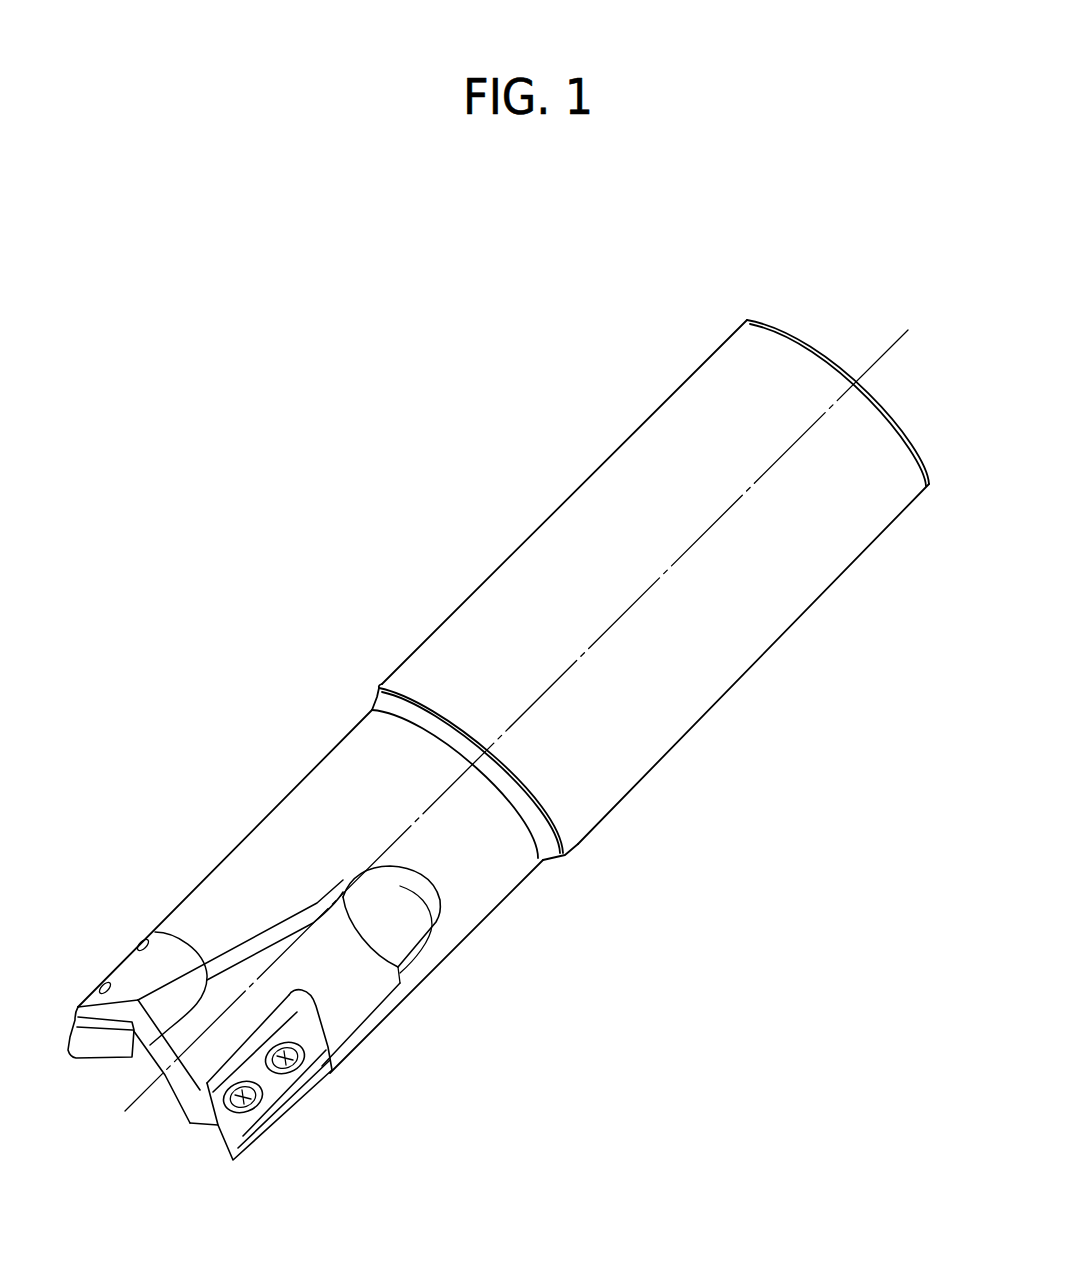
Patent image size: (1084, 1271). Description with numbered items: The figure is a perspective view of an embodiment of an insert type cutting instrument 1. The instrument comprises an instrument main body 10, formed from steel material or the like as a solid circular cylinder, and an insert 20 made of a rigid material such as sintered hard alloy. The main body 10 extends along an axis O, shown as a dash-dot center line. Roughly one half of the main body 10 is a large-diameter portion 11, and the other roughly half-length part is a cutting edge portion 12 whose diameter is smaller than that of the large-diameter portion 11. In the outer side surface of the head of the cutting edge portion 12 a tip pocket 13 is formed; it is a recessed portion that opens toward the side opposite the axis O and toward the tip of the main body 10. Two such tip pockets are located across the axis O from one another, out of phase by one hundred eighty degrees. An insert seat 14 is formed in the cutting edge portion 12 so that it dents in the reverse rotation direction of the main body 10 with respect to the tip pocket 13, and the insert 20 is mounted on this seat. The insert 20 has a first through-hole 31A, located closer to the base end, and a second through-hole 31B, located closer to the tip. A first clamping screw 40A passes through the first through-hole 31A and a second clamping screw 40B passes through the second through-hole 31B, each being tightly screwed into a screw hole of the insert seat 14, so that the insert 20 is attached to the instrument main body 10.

The insert type cutting instrument 1 is at (248, 357).
The axis O is at (903, 333).
The instrument main body 10 is at (455, 578).
The large-diameter portion 11 is at (763, 617).
The cutting edge portion 12 is at (325, 763).
The tip pocket 13 is at (408, 920).
The insert seat 14 is at (294, 975).
The insert 20 is at (191, 1123).
The first through-hole 31A is at (333, 1052).
The second through-hole 31B is at (207, 1132).
The first clamping screw 40A is at (283, 1120).
The second clamping screw 40B is at (243, 1143).